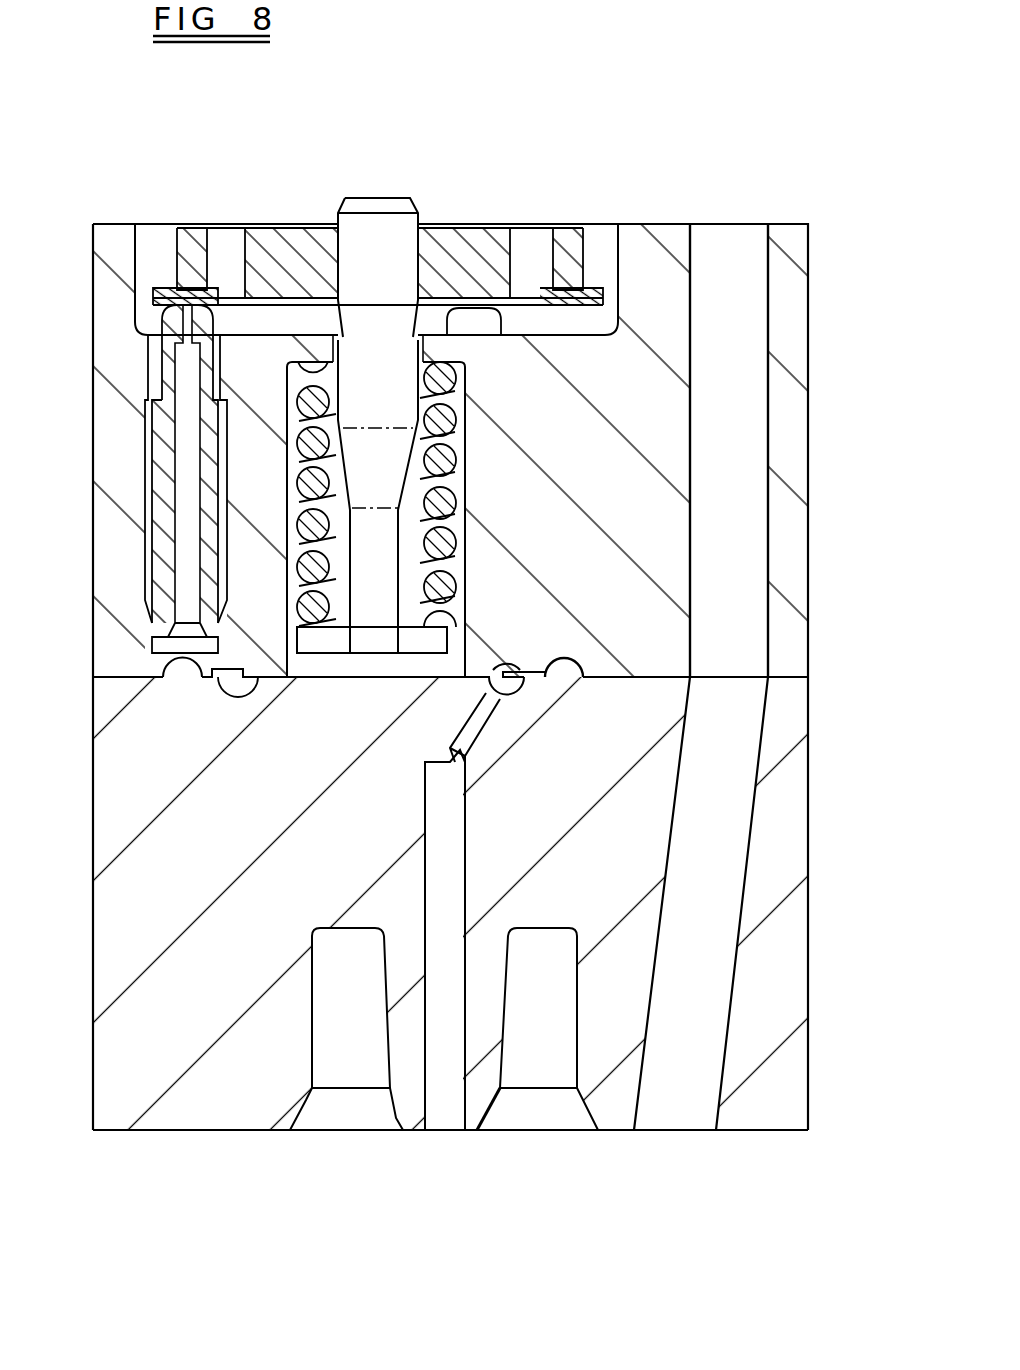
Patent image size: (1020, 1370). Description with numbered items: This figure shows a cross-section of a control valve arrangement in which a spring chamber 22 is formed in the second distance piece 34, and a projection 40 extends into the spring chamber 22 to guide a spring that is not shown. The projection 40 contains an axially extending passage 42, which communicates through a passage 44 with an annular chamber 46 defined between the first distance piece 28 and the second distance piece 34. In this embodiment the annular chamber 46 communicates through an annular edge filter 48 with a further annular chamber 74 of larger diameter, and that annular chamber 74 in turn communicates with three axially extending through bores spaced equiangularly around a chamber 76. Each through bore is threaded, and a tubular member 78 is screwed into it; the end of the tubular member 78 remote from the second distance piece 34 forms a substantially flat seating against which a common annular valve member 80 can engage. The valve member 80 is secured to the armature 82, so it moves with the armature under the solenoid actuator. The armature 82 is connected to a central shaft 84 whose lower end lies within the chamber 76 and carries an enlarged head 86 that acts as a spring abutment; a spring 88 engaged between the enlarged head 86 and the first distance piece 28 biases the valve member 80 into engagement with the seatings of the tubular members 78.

The spring chamber 22 is at (552, 1070).
The first distance piece 28 is at (796, 485).
The second distance piece 34 is at (797, 718).
The projection 40 is at (487, 1097).
The axially extending passage 42 is at (440, 1103).
The passage 44 is at (472, 732).
The annular chamber 46 is at (520, 683).
The annular edge filter 48 is at (538, 660).
The further annular chamber 74 is at (567, 672).
The chamber 76 is at (463, 405).
The tubular member 78 is at (163, 423).
The annular valve member 80 is at (165, 287).
The armature 82 is at (565, 247).
The central shaft 84 is at (360, 457).
The enlarged head 86 is at (330, 640).
The spring 88 is at (305, 525).